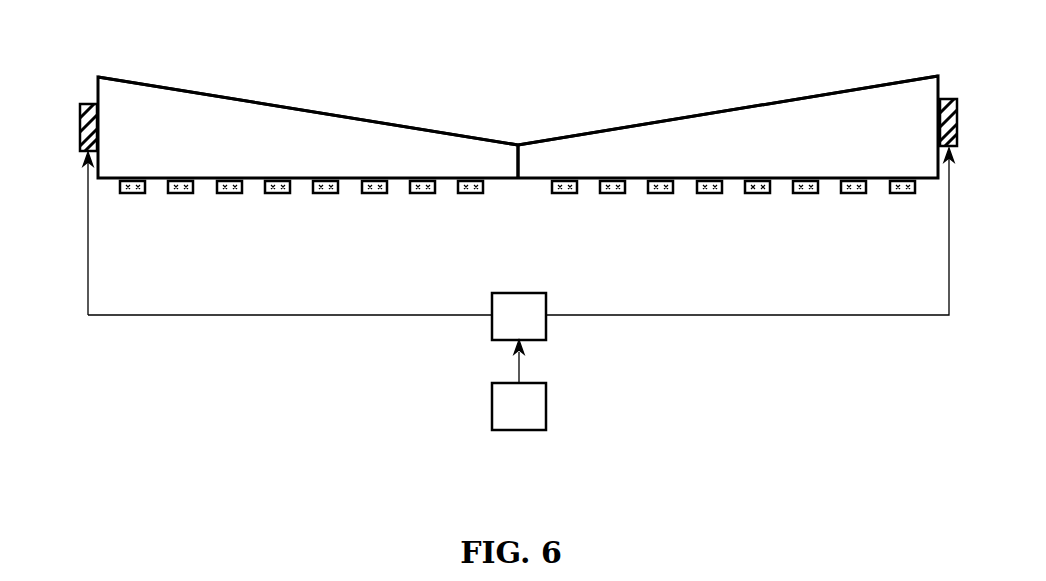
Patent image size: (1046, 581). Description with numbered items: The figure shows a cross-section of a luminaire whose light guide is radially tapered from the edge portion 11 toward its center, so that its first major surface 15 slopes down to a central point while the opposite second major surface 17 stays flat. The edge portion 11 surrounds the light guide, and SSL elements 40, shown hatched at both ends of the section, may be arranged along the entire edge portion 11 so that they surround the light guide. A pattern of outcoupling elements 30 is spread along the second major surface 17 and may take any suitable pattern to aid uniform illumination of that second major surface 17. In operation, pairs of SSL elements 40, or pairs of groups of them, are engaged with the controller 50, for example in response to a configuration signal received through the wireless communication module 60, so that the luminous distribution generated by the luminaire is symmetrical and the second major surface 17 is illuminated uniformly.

The edge portion 11 is at (97, 90).
The first major surface 15 is at (294, 108).
The second major surface 17 is at (505, 192).
The outcoupling elements 30 is at (322, 194).
The SSL elements 40 is at (87, 118).
The controller 50 is at (535, 327).
The wireless communication module 60 is at (538, 410).